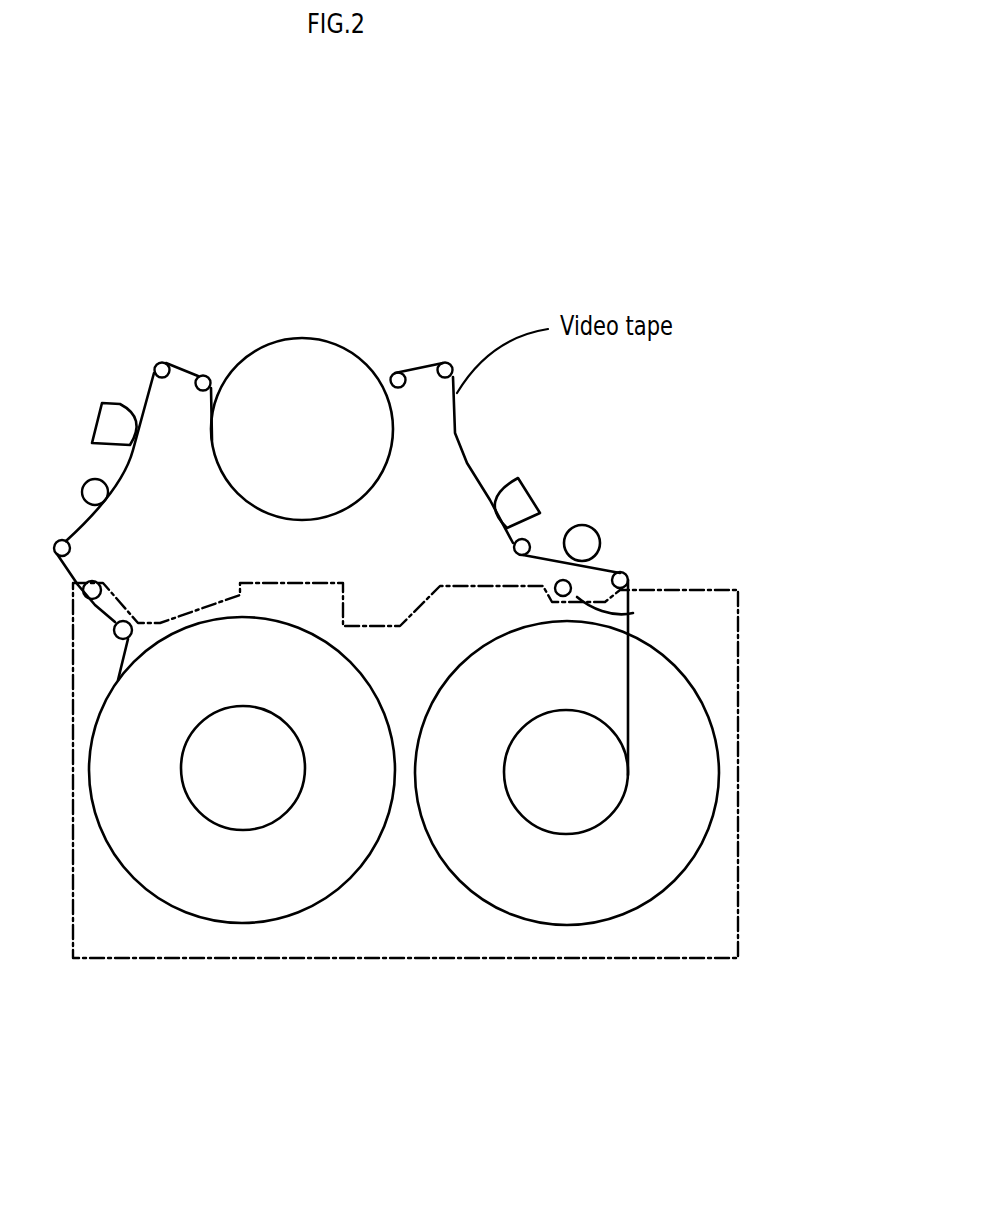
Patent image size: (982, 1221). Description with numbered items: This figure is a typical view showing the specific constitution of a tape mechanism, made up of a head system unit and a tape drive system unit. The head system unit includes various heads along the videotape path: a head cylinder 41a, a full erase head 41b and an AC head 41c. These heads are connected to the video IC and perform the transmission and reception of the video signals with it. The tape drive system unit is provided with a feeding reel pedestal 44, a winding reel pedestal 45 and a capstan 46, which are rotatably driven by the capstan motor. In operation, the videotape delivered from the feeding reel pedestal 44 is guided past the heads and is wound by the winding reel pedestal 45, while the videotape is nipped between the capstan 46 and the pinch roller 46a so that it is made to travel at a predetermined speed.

The head cylinder 41a is at (318, 337).
The full erase head 41b is at (112, 400).
The AC head 41c is at (507, 480).
The pinch roller 46a is at (592, 527).
The capstan 46 is at (633, 613).
The feeding reel pedestal 44 is at (245, 827).
The winding reel pedestal 45 is at (563, 830).